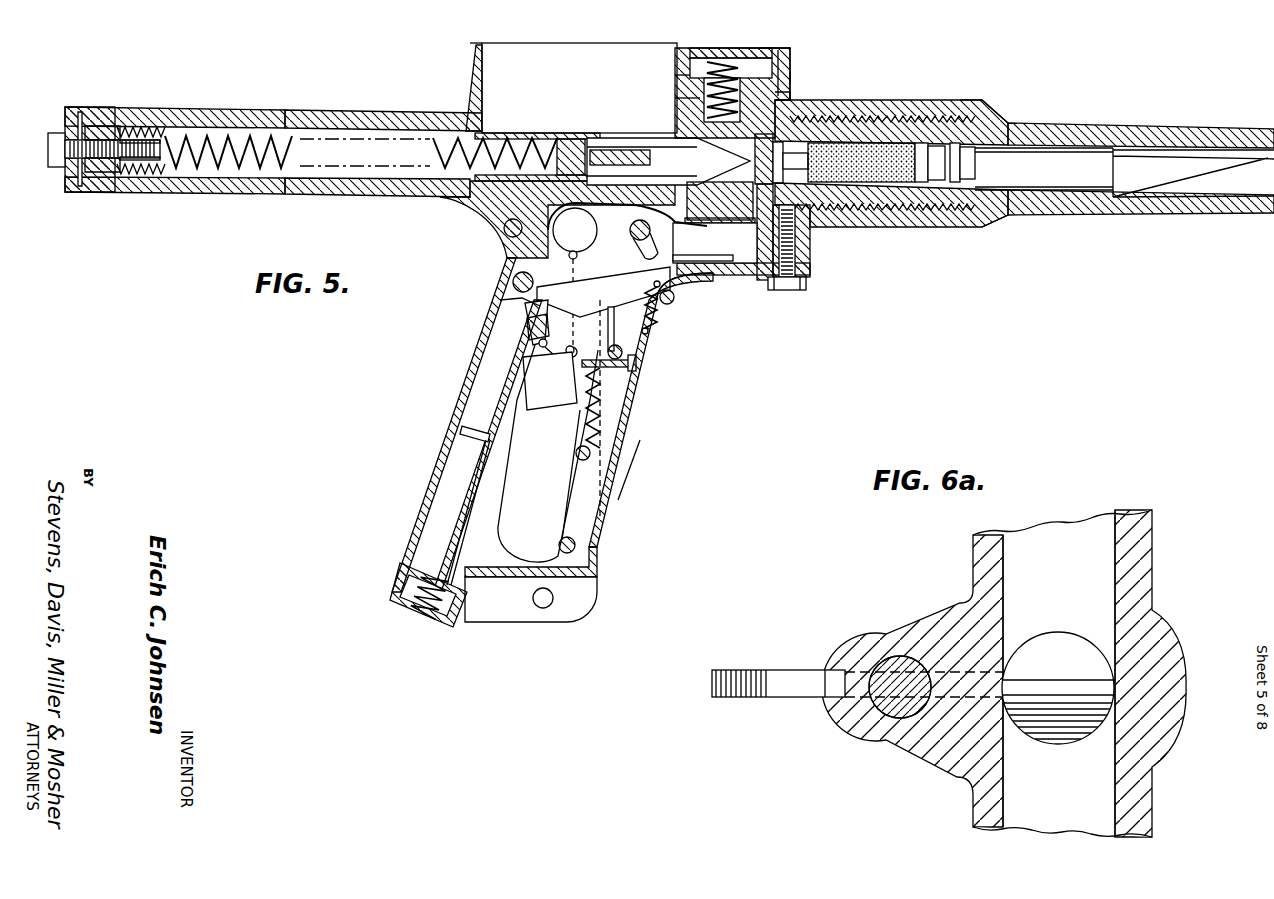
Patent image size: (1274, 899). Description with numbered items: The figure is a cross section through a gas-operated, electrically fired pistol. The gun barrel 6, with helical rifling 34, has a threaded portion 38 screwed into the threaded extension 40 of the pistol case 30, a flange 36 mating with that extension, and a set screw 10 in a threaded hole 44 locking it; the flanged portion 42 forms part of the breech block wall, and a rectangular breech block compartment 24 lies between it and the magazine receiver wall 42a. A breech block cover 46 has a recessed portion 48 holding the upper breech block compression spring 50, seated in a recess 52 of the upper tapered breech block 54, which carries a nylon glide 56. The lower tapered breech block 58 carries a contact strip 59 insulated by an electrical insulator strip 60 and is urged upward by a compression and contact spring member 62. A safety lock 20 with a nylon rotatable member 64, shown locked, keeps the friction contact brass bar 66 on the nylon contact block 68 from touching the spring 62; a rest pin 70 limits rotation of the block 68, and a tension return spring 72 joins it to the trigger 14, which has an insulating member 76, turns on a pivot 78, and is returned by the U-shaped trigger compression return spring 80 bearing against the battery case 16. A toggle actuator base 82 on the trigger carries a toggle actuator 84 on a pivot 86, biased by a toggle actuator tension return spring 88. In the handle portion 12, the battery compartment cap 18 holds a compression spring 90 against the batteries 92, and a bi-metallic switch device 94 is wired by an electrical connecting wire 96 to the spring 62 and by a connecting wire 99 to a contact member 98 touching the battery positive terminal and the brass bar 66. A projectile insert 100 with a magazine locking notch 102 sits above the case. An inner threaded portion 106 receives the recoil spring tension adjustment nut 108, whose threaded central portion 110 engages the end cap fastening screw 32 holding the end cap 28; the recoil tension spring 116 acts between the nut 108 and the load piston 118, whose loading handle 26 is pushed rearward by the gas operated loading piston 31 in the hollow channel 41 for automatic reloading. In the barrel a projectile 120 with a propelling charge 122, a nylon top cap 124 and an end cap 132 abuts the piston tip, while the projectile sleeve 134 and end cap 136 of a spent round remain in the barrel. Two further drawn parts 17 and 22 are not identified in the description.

In FIG. 5, the gun barrel 6 is at (1180, 123).
In FIG. 5, the set screw 10 is at (780, 283).
In FIG. 5, the handle portion 12 is at (505, 624).
In FIG. 5, the trigger 14 is at (634, 418).
In FIG. 5, the battery case 16 is at (450, 440).
In FIG. 5, the frame pin 17 is at (503, 231).
In FIG. 5, the battery compartment cap 18 is at (398, 586).
In FIG. 5, the safety lock 20 is at (633, 235).
In FIG. 5, the slide 22 is at (482, 48).
In FIG. 5, the breech block compartment 24 is at (778, 56).
In FIG. 6a, the breech block compartment 24 is at (1052, 540).
In FIG. 5, the loading handle 26 is at (650, 158).
In FIG. 6a, the loading handle 26 is at (752, 668).
In FIG. 5, the end cap 28 is at (205, 108).
In FIG. 5, the pistol case 30 is at (318, 111).
In FIG. 6a, the pistol case 30 is at (895, 702).
In FIG. 6a, the gas operated loading piston 31 is at (893, 658).
In FIG. 5, the end cap fastening screw 32 is at (57, 133).
In FIG. 5, the rifling 34 is at (1225, 163).
In FIG. 5, the flange 36 is at (1000, 110).
In FIG. 5, the threaded portion 38 is at (910, 112).
In FIG. 5, the threaded extension 40 is at (965, 95).
In FIG. 6a, the hollow channel 41 is at (903, 722).
In FIG. 5, the flanged portion 42 is at (793, 74).
In FIG. 5, the magazine receiver wall 42a is at (680, 60).
In FIG. 5, the threaded hole 44 is at (803, 244).
In FIG. 5, the breech block cover 46 is at (792, 58).
In FIG. 5, the recessed portion 48 is at (716, 58).
In FIG. 5, the upper breech block compression spring 50 is at (740, 78).
In FIG. 5, the recess 52 is at (680, 99).
In FIG. 5, the upper tapered breech block 54 is at (683, 80).
In FIG. 5, the nylon glide 56 is at (792, 92).
In FIG. 5, the lower tapered breech block 58 is at (718, 182).
In FIG. 5, the contact strip 59 is at (750, 224).
In FIG. 5, the electrical insulator strip 60 is at (710, 226).
In FIG. 5, the compression and contact spring member 62 is at (600, 215).
In FIG. 5, the rotatable member 64 is at (700, 286).
In FIG. 5, the friction contact brass bar 66 is at (562, 279).
In FIG. 5, the contact block 68 is at (610, 303).
In FIG. 5, the rest pin 70 is at (675, 303).
In FIG. 5, the tension return spring 72 is at (660, 318).
In FIG. 5, the insulating member 76 is at (628, 460).
In FIG. 5, the pivot 78 is at (567, 537).
In FIG. 5, the trigger compression return spring 80 is at (505, 500).
In FIG. 5, the toggle actuator base 82 is at (640, 365).
In FIG. 5, the toggle actuator 84 is at (624, 350).
In FIG. 5, the pivot 86 is at (605, 400).
In FIG. 5, the toggle actuator tension return spring 88 is at (606, 396).
In FIG. 5, the compression spring 90 is at (422, 607).
In FIG. 5, the batteries 92 is at (480, 345).
In FIG. 5, the bi-metallic switch device 94 is at (545, 410).
In FIG. 5, the electrical connecting wire 96 is at (530, 340).
In FIG. 5, the contact member 98 is at (500, 300).
In FIG. 5, the connecting wire 99 is at (545, 330).
In FIG. 5, the projectile insert 100 is at (537, 55).
In FIG. 5, the magazine locking notch 102 is at (470, 103).
In FIG. 5, the inner threaded portion 106 is at (150, 126).
In FIG. 5, the recoil spring tension adjustment nut 108 is at (100, 126).
In FIG. 5, the threaded central portion 110 is at (98, 192).
In FIG. 5, the recoil tension spring 116 is at (238, 178).
In FIG. 5, the load piston 118 is at (600, 133).
In FIG. 6a, the load piston 118 is at (1085, 623).
In FIG. 5, the projectile 120 is at (850, 135).
In FIG. 5, the propelling charge 122 is at (922, 186).
In FIG. 5, the nylon top cap 124 is at (958, 186).
In FIG. 5, the end cap 132 is at (760, 142).
In FIG. 5, the projectile sleeve 134 is at (1085, 145).
In FIG. 5, the end cap 136 is at (956, 166).